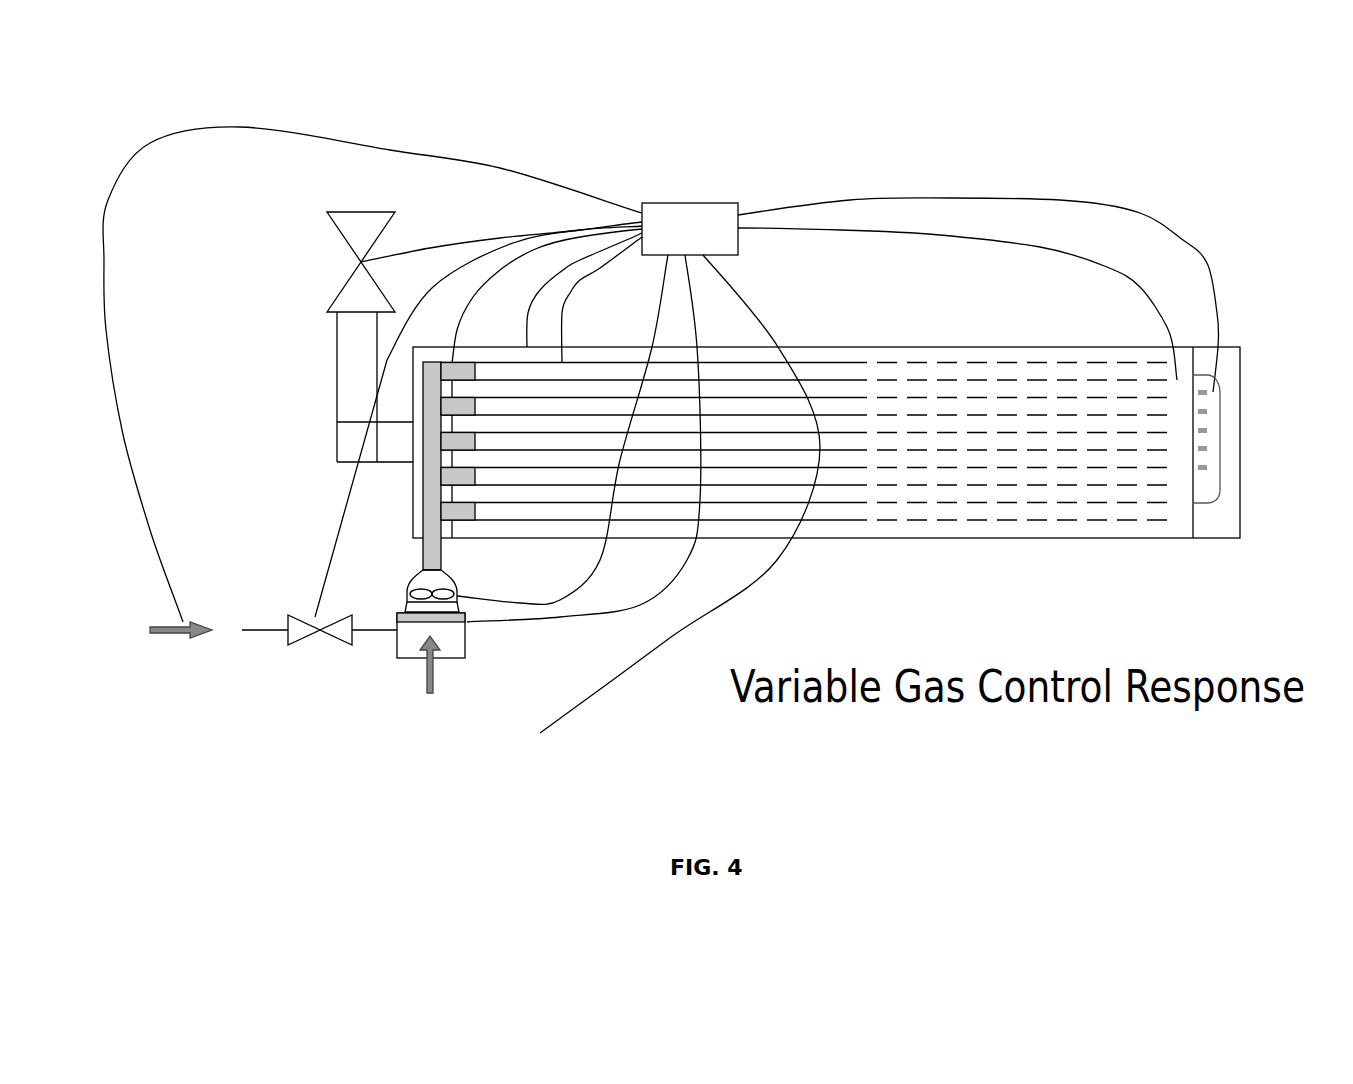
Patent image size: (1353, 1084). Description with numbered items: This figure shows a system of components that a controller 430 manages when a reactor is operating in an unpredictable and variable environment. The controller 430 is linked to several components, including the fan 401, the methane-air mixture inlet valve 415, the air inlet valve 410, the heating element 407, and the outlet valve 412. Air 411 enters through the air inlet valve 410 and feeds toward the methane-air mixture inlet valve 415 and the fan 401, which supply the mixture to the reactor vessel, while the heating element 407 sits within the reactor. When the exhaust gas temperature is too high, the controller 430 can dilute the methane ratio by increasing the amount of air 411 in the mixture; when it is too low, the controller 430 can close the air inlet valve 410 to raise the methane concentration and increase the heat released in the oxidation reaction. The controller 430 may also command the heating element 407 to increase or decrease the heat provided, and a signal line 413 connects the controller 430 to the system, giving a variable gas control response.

The fan 401 is at (440, 580).
The heating element 407 is at (1213, 410).
The air inlet valve 410 is at (292, 617).
The air 411 is at (371, 382).
The outlet valve 412 is at (325, 211).
The sensor signal line 413 is at (661, 502).
The methane-air mixture inlet valve 415 is at (465, 632).
The controller 430 is at (671, 242).